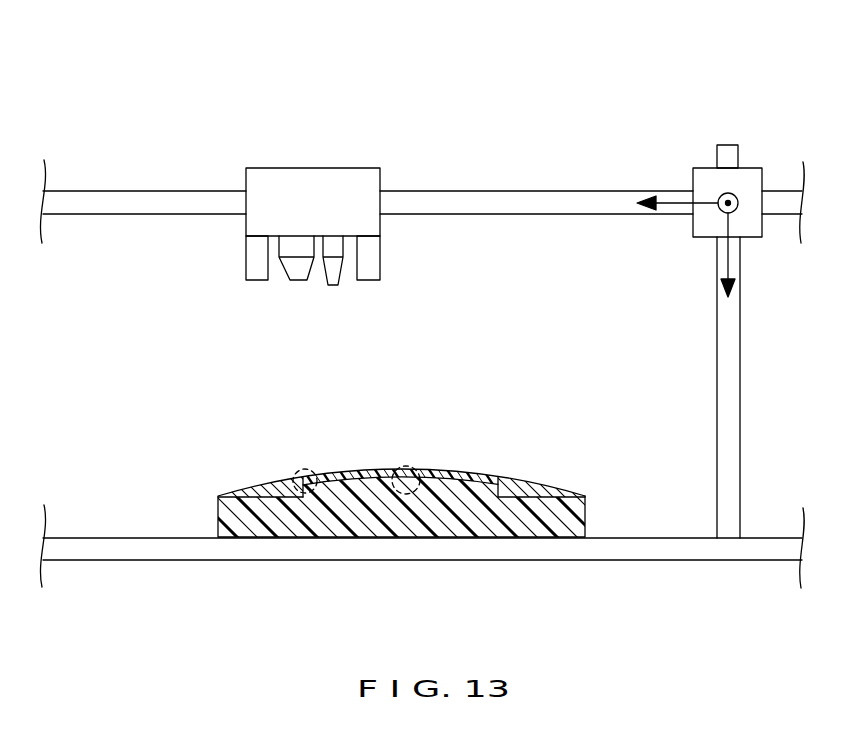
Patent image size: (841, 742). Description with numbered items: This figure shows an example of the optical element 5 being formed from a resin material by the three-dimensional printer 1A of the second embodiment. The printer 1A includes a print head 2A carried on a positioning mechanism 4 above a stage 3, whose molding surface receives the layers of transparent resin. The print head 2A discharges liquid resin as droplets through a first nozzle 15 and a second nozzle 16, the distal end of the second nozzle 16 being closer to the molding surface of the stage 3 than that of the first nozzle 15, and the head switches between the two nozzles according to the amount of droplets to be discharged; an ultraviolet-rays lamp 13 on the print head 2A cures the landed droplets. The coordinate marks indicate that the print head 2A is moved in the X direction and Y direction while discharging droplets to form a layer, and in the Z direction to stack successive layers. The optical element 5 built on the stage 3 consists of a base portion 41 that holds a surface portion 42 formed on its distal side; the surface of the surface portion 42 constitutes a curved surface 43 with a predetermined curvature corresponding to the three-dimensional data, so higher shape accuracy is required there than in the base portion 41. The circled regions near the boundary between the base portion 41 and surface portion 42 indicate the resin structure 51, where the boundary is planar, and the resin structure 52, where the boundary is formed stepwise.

The 3D printer 1A is at (663, 102).
The print head 2A is at (332, 168).
The stage 3 is at (675, 538).
The positioning mechanism 4 is at (605, 190).
The optical element 5 is at (602, 360).
The ultraviolet-rays lamp 13 is at (250, 265).
The first nozzle 15 is at (298, 277).
The second nozzle 16 is at (333, 285).
The base portion 41 is at (585, 510).
The surface portion 42 is at (512, 487).
The curved surface 43 is at (463, 472).
The resin structure 51 is at (410, 466).
The resin structure 52 is at (296, 470).
The X direction X is at (670, 207).
The Y direction Y is at (732, 193).
The Z direction Z is at (735, 257).